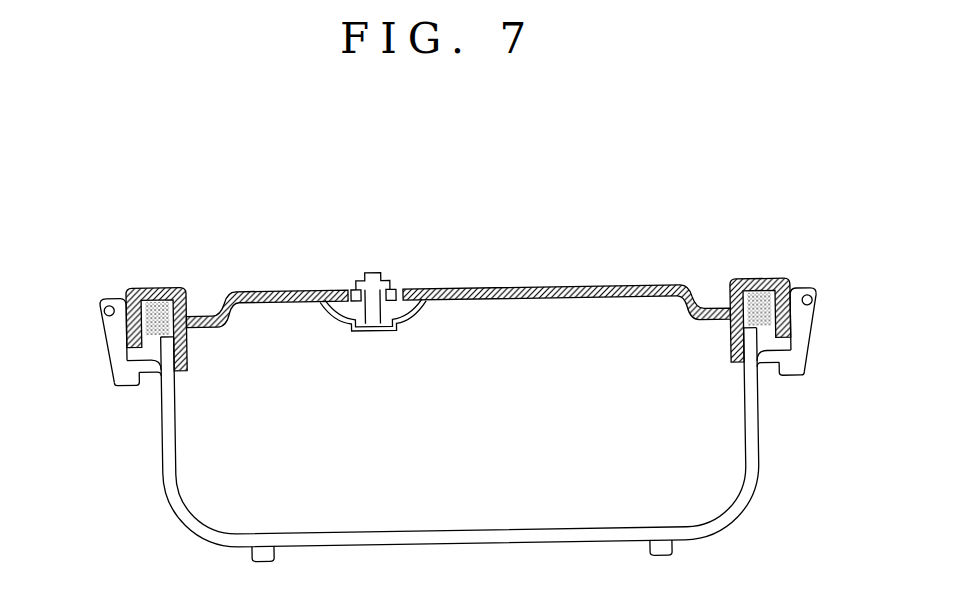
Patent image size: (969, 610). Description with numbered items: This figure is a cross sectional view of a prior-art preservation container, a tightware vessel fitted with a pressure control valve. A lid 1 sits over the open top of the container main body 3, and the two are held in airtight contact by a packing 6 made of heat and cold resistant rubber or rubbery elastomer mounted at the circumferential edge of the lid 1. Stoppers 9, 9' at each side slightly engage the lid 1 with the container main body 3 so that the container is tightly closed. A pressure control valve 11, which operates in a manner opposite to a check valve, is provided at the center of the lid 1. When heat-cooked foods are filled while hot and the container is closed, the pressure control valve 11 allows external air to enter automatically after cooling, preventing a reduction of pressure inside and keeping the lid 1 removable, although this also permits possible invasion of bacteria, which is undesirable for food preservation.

The lid 1 is at (544, 288).
The container main body 3 is at (177, 438).
The packing 6 is at (158, 307).
The stopper 9 is at (103, 349).
The stopper 9' is at (827, 330).
The pressure control valve 11 is at (380, 329).